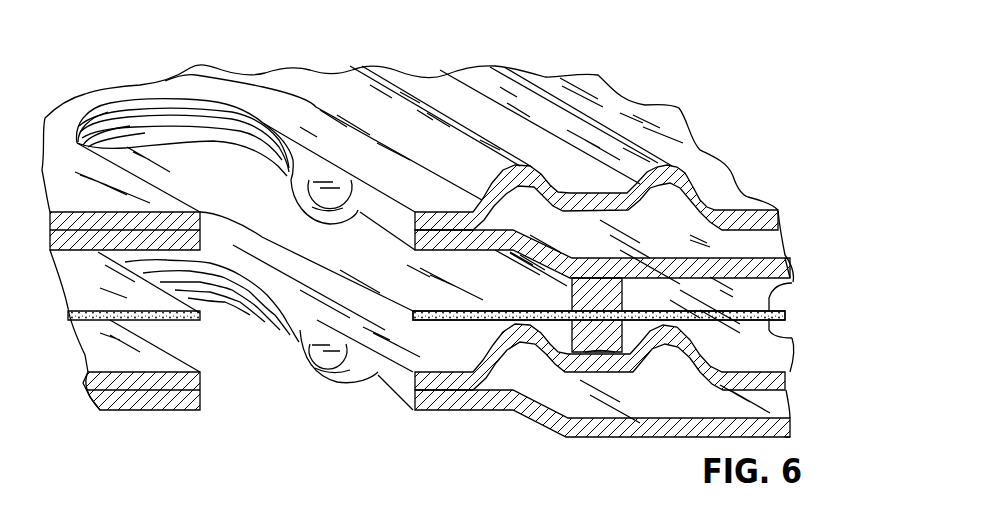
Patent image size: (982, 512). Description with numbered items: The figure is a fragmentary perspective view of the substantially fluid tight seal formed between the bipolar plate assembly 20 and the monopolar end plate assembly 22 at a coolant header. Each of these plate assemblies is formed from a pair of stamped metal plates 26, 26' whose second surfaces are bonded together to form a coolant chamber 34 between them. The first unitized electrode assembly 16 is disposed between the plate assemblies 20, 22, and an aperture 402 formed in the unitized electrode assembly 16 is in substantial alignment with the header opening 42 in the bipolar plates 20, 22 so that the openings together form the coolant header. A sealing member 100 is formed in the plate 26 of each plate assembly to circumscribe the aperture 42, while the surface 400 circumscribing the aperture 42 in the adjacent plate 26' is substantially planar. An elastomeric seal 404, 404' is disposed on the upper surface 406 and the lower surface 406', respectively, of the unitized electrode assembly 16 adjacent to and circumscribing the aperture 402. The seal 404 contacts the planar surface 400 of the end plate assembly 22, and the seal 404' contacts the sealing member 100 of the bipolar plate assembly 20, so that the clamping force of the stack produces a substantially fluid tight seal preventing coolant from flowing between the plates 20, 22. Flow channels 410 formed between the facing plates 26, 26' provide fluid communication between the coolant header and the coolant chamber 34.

The sealing member 100 is at (602, 117).
The monopolar end plate assembly 22 is at (267, 105).
The bipolar plate assembly 20 is at (397, 370).
The aperture 42 is at (112, 113).
The plate 26 is at (445, 287).
The plate 26' is at (630, 333).
The unitized electrode assembly 16 is at (787, 318).
The aperture 402 is at (200, 317).
The elastomeric seal 404 is at (552, 313).
The elastomeric seal 404' is at (639, 379).
The upper surface 406 is at (806, 293).
The lower surface 406' is at (808, 330).
The planar surface 400 is at (744, 280).
The flow channel 410 is at (301, 358).
The coolant chamber 34 is at (627, 404).